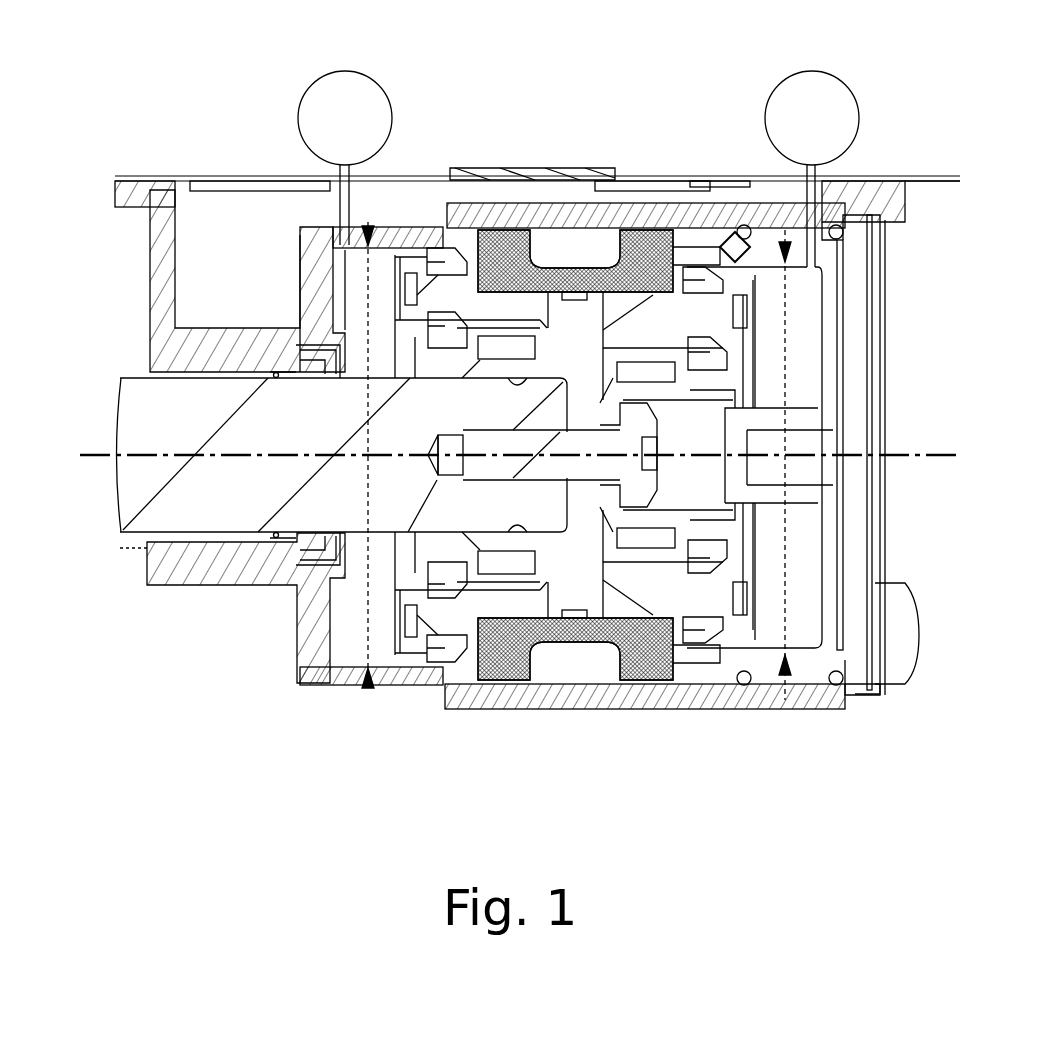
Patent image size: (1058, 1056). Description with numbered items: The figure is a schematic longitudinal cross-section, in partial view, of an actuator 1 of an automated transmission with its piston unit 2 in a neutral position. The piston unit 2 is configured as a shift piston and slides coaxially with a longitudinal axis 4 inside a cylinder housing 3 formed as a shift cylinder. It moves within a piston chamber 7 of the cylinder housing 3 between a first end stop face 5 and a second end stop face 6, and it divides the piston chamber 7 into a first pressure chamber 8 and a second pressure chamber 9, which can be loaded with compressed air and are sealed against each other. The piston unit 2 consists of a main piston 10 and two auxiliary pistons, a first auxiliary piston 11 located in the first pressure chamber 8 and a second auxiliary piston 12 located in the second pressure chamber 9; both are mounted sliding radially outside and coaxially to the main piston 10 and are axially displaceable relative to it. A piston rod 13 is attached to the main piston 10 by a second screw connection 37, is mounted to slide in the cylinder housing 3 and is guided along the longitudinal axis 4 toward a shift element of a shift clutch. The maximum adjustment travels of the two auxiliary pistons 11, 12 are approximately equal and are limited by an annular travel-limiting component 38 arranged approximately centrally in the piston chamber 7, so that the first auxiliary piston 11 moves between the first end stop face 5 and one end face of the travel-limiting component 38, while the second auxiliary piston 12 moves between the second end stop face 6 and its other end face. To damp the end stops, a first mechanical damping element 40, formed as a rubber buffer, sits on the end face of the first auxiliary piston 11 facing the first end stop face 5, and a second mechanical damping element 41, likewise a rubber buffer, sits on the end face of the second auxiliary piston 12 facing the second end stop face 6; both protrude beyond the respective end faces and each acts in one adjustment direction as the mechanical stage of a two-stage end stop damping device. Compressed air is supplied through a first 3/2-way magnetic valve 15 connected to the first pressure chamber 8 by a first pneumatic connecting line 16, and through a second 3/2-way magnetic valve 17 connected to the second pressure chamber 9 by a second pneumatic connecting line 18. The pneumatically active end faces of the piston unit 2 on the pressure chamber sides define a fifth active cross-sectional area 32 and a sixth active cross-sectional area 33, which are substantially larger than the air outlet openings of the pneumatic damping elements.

The actuator 1 is at (112, 96).
The piston unit 2 is at (442, 228).
The cylinder housing 3 is at (150, 300).
The longitudinal axis 4 is at (922, 458).
The first end stop face 5 is at (333, 290).
The second end stop face 6 is at (820, 330).
The piston chamber 7 is at (345, 265).
The first pressure chamber 8 is at (359, 456).
The second pressure chamber 9 is at (795, 465).
The main piston 10 is at (595, 307).
The first auxiliary piston 11 is at (448, 640).
The second auxiliary piston 12 is at (690, 620).
The piston rod 13 is at (130, 412).
The first 3/2-way magnetic valve 15 is at (322, 78).
The first pneumatic connecting line 16 is at (340, 192).
The second 3/2-way magnetic valve 17 is at (830, 76).
The second pneumatic connecting line 18 is at (815, 192).
The fifth active cross-sectional area 32 is at (365, 640).
The sixth active cross-sectional area 33 is at (788, 633).
The second screw connection 37 is at (585, 480).
The travel-limiting component 38 is at (512, 675).
The first mechanical damping element 40 is at (393, 625).
The second mechanical damping element 41 is at (755, 582).